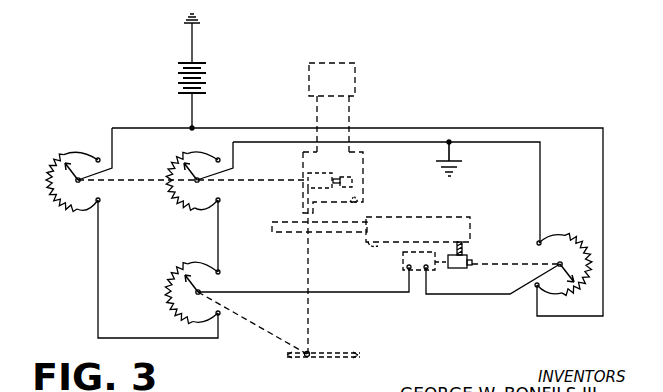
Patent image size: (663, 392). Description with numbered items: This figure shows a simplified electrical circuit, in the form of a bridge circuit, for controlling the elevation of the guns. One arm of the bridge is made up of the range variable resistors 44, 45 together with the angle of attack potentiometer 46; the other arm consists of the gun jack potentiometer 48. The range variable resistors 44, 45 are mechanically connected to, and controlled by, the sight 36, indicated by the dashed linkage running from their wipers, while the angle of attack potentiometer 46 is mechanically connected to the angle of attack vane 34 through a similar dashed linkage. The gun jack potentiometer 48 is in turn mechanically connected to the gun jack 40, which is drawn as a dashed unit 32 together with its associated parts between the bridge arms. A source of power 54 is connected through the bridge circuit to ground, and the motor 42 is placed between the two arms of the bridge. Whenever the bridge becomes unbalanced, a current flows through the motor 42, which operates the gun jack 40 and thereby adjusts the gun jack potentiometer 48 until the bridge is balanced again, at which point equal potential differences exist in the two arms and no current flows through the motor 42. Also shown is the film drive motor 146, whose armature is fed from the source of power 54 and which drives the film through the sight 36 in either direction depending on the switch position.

The source of power 54 is at (208, 82).
The range variable resistor 44 is at (79, 151).
The range variable resistor 45 is at (177, 153).
The angle of attack potentiometer 46 is at (168, 292).
The gun jack potentiometer 48 is at (580, 214).
The sight 36 is at (357, 77).
The film drive motor 146 is at (333, 173).
The servo unit 32 is at (400, 218).
The motor 42 is at (403, 263).
The gun jack 40 is at (470, 252).
The angle of attack vane 34 is at (312, 367).